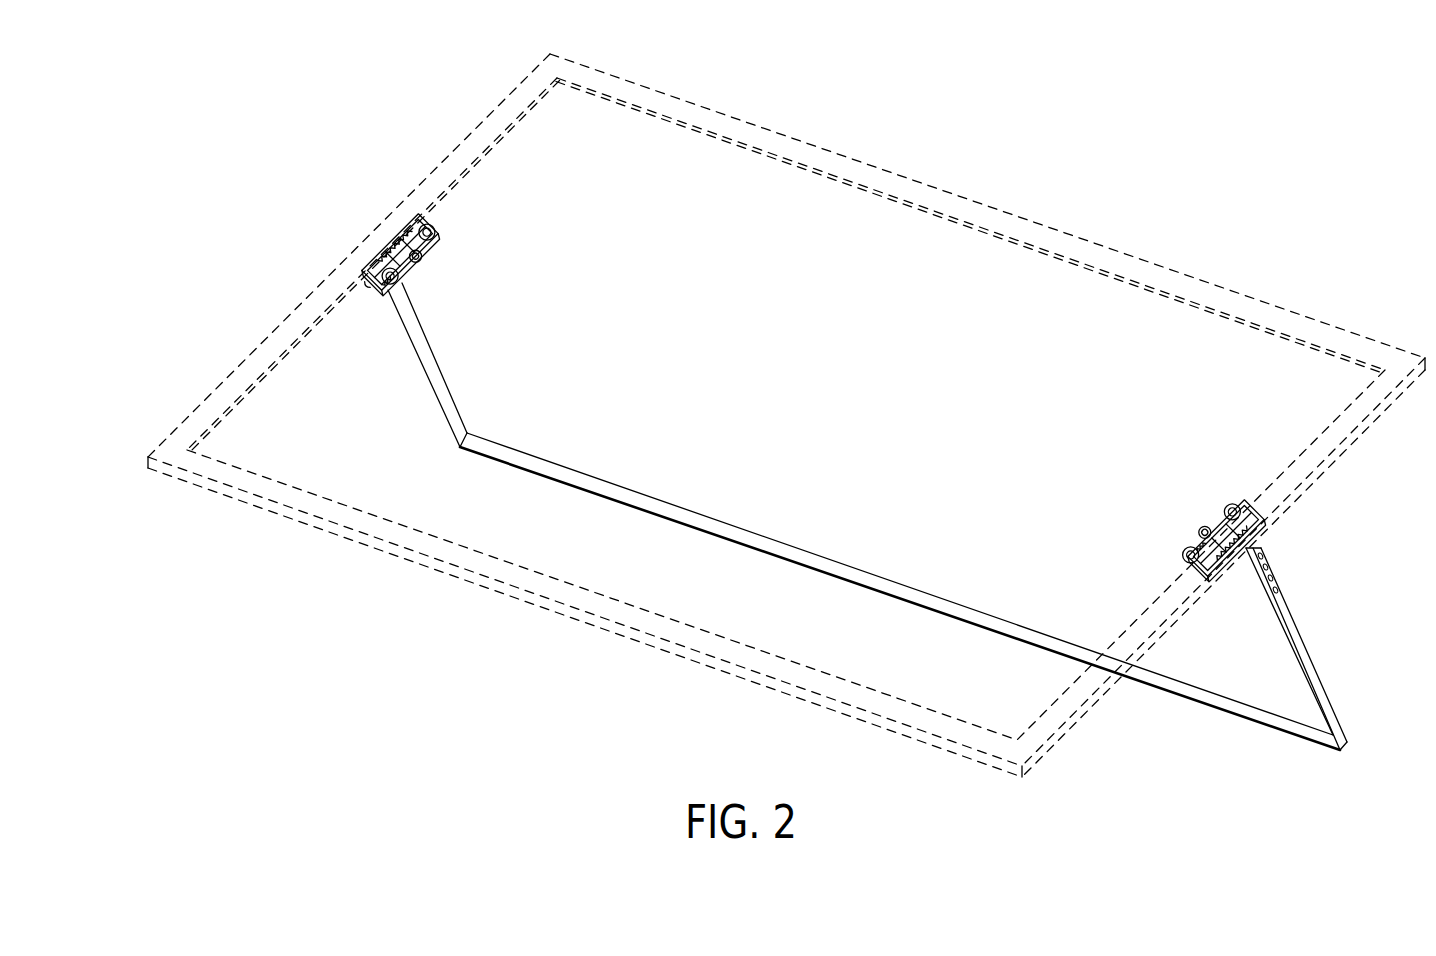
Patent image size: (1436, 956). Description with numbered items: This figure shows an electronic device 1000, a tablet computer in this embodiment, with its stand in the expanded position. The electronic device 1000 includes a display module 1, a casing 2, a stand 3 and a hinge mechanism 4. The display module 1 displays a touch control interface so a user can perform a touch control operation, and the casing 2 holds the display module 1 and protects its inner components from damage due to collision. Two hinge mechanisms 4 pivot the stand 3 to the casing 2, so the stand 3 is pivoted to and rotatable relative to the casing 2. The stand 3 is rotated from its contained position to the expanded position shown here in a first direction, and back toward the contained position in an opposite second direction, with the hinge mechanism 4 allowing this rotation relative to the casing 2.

The electronic device 1000 is at (1212, 166).
The display module 1 is at (1194, 320).
The casing 2 is at (1303, 313).
The stand 3 is at (1277, 605).
The hinge mechanism 4 is at (443, 265).